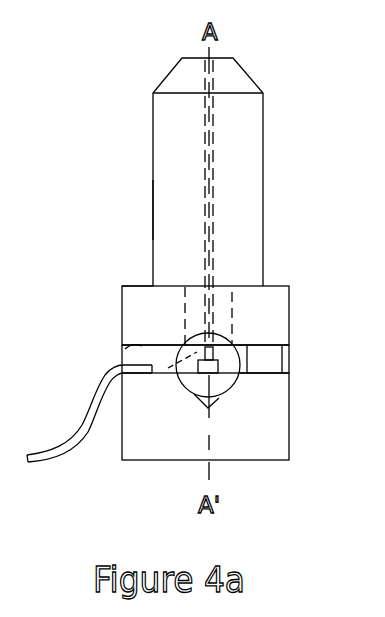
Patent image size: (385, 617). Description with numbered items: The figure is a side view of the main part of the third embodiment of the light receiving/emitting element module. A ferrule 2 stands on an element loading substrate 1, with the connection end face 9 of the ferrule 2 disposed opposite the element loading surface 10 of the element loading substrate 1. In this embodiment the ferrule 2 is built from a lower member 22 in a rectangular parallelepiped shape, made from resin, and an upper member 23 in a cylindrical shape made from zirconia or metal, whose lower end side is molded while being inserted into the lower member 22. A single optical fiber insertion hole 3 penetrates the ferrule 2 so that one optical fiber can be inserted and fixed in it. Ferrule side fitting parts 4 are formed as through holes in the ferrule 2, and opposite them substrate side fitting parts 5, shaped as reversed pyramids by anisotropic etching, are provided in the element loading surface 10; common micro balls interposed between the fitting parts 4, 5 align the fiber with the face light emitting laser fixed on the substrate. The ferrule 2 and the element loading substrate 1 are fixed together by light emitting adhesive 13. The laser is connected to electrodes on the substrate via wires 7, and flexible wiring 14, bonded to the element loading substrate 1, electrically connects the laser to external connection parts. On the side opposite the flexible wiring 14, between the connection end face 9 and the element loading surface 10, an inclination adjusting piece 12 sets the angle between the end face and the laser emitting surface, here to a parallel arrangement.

The element loading substrate 1 is at (150, 450).
The ferrule 2 is at (170, 150).
The optical fiber insertion hole 3 is at (217, 152).
The ferrule side fitting part 4 is at (238, 312).
The substrate side fitting part 5 is at (200, 402).
The wire 7 is at (173, 362).
The connection end face 9 is at (125, 349).
The element loading surface 10 is at (285, 358).
The inclination adjusting piece 12 is at (267, 368).
The light emitting adhesive 13 is at (142, 354).
The flexible wiring 14 is at (70, 445).
The lower member 22 is at (143, 297).
The upper member 23 is at (170, 210).